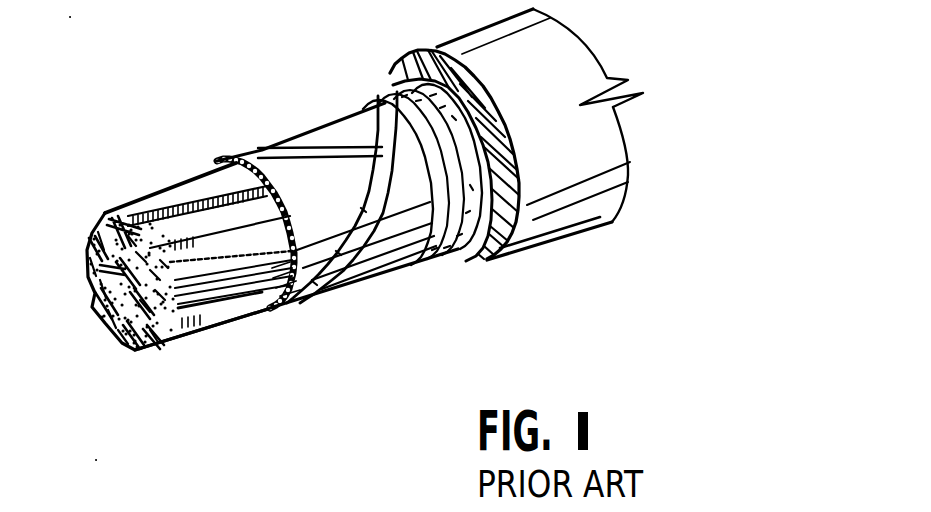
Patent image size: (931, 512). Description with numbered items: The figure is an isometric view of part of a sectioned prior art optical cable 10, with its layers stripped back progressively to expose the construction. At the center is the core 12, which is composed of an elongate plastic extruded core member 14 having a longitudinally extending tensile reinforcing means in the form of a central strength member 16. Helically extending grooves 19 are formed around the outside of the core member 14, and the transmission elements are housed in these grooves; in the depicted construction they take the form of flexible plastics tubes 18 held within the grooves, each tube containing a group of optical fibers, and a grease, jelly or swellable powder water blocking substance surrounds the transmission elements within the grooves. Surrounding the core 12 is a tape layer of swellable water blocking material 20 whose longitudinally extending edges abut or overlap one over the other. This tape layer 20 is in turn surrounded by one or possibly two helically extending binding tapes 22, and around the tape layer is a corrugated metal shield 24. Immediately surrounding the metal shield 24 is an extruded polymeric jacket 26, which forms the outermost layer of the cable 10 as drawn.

The optical cable 10 is at (349, 75).
The core 12 is at (144, 195).
The elongate plastic extruded core member 14 is at (233, 308).
The central strength member 16 is at (100, 307).
The flexible plastics tubes 18 is at (213, 300).
The helically extending grooves 19 is at (187, 200).
The tape layer of swellable water blocking material 20 is at (305, 185).
The helically extending binding tapes 22 is at (342, 140).
The corrugated metal shield 24 is at (445, 255).
The extruded polymeric jacket 26 is at (573, 165).